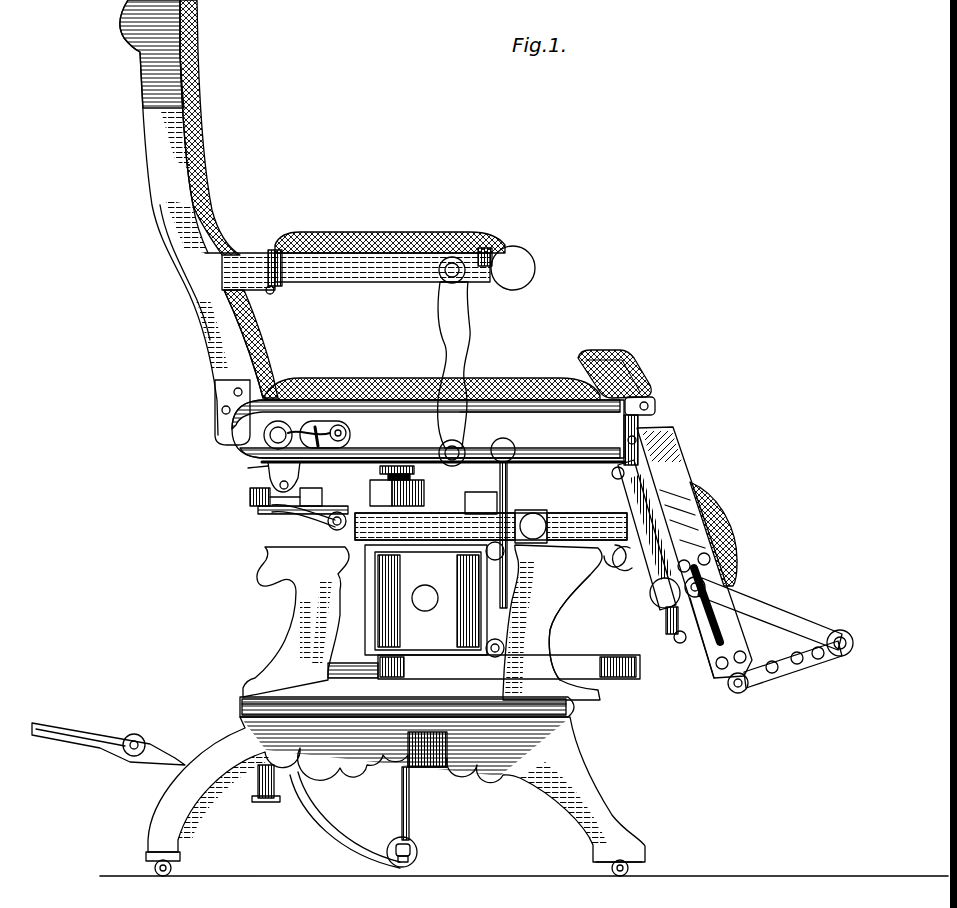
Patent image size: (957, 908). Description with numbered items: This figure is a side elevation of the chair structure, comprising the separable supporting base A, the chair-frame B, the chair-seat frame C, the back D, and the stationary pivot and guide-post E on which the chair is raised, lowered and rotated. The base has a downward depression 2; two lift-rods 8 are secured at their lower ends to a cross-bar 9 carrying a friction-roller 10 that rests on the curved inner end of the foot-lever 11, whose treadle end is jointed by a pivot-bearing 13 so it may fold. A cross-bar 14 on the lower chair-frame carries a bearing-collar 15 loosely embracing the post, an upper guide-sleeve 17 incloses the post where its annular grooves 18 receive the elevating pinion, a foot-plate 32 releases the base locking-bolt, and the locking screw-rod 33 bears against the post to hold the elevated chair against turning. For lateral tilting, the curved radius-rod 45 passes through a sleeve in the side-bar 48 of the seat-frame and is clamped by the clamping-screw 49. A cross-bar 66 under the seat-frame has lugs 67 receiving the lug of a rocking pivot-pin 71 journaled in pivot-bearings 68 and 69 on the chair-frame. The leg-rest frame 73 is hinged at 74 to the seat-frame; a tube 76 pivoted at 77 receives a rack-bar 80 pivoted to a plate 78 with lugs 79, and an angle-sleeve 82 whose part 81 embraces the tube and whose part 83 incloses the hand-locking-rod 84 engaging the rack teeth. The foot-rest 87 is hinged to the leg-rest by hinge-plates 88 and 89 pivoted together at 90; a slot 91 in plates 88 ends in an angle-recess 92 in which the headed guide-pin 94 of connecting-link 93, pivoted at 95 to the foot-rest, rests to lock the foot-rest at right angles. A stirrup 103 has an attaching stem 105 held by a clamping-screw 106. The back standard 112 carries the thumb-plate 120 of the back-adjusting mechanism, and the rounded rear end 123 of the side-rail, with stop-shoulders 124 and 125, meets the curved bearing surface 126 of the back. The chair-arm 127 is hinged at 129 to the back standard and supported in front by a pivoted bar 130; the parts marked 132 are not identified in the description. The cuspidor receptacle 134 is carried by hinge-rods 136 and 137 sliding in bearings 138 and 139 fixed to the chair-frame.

The back D is at (202, 148).
The back standard 112 is at (168, 218).
The stop-shoulder 124 is at (225, 408).
The rounded rear end of side-rail 123 is at (235, 448).
The stop-shoulder 125 is at (248, 468).
The chair-arm 127 is at (385, 268).
The arm fastening 132 is at (275, 255).
The hinge of chair-arm 129 is at (272, 291).
The bar 130 is at (458, 311).
The chair-seat frame C is at (410, 395).
The thumb-plate 120 is at (305, 432).
The side-bar of seat-frame 48 is at (540, 416).
The clamping-screw 49 is at (514, 451).
The bearing-collar 15 is at (605, 465).
The annular grooves 18 is at (399, 464).
The stationary pivot and guide-post E is at (425, 488).
The curved radius-rod 45 is at (506, 487).
The guide-sleeve 17 is at (491, 527).
The rocking pivot-pin 71 is at (280, 500).
The cross-bar 66 is at (255, 490).
The pivot-bearing 68 is at (262, 505).
The curved bearing surface of chair-back 126 is at (303, 528).
The pivot-bearing 69 is at (345, 516).
The lugs 67 is at (300, 492).
The hinge-rod 136 is at (484, 552).
The cuspidor receptacle 134 is at (420, 606).
The hinge-rod 137 is at (486, 648).
The chair-frame B is at (300, 608).
The bearing 138 is at (522, 556).
The bearing 139 is at (537, 640).
The locking screw-rod 33 is at (332, 676).
The cross-bar 14 is at (565, 712).
The supporting-base A is at (340, 752).
The downward extension 2 is at (427, 763).
The lift-rods 8 is at (402, 808).
The friction-roller 10 is at (415, 848).
The cross-bar 9 is at (412, 855).
The foot-plate 32 is at (266, 800).
The foot-lever 11 is at (92, 738).
The pivot-bearing 13 is at (142, 745).
The stirrup 103 is at (580, 358).
The clamping-screw 106 is at (656, 404).
The attaching stem 105 is at (694, 546).
The hinge 74 is at (628, 440).
The leg-rest frame 73 is at (680, 514).
The pivot 77 is at (612, 476).
The tube 76 is at (648, 526).
The angle-recess 92 is at (712, 535).
The sleeve part 81 is at (648, 560).
The angle-sleeve 82 is at (678, 568).
The sleeve part 83 is at (655, 597).
The hand-locking-rod 84 is at (650, 606).
The rack-bar 80 is at (668, 626).
The lugs 79 is at (700, 648).
The plate 78 is at (702, 648).
The hinge-plates 88 is at (712, 560).
The guide-pin 94 is at (706, 583).
The slot 91 is at (740, 606).
The connecting-link 93 is at (788, 628).
The pivot 95 is at (835, 628).
The foot-rest 87 is at (790, 650).
The hinge-plates 89 is at (812, 664).
The pivot 90 is at (738, 690).